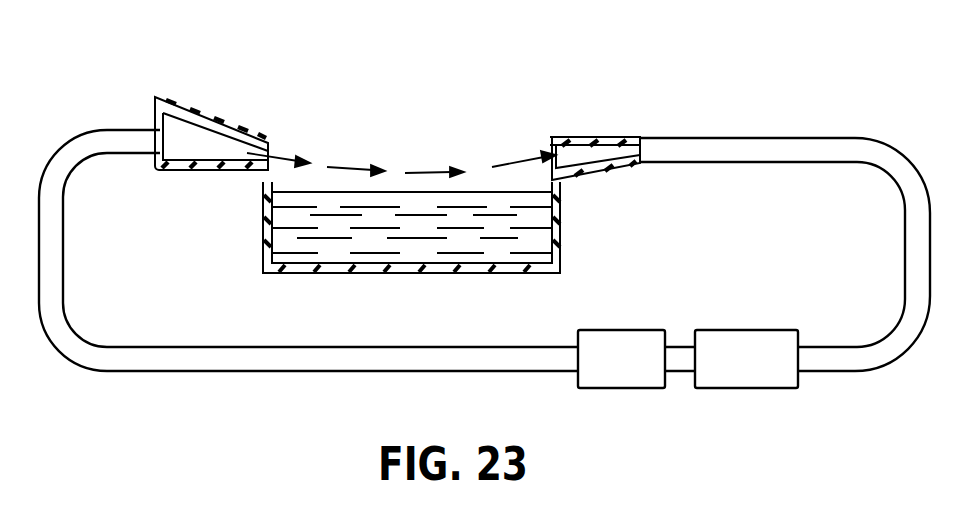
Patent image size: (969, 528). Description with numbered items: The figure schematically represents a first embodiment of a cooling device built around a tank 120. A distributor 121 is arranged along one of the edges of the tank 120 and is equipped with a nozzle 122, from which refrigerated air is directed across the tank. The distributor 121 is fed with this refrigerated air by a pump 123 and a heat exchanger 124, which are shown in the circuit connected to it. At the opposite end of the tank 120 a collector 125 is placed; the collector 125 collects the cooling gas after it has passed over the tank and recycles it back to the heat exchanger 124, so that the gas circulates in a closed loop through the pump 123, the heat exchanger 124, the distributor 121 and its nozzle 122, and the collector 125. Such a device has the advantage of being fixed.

The tank 120 is at (262, 240).
The distributor 121 is at (182, 112).
The nozzle 122 is at (262, 147).
The pump 123 is at (618, 368).
The heat exchanger 124 is at (737, 368).
The collector 125 is at (596, 138).